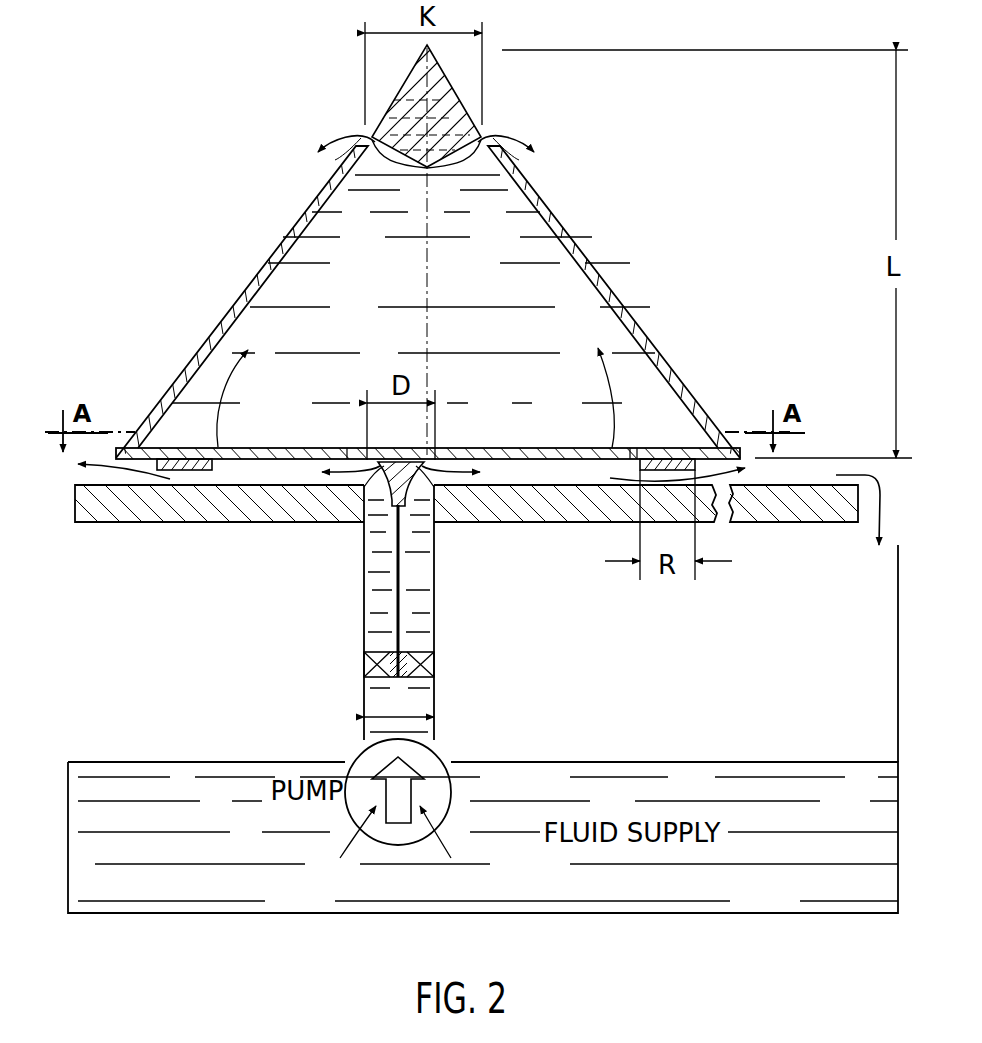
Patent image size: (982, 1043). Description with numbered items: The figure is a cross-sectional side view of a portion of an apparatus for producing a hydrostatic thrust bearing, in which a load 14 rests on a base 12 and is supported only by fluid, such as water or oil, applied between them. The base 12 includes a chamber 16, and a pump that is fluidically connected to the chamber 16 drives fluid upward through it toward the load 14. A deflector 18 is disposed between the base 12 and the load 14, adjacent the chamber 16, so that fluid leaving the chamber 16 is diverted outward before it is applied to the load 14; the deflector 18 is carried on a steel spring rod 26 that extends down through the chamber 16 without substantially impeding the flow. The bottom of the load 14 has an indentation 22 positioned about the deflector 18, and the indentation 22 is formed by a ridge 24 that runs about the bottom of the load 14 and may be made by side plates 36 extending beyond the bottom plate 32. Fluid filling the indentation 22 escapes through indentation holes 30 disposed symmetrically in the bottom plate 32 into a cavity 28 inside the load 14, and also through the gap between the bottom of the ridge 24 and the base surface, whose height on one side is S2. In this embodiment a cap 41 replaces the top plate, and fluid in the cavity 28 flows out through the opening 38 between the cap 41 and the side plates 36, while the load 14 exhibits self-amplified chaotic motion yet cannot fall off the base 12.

The base 12 is at (794, 502).
The load 14 is at (428, 301).
The chamber 16 is at (364, 700).
The deflector 18 is at (392, 502).
The indentation 22 is at (432, 426).
The ridge 24 is at (655, 465).
The steel spring rod 26 is at (397, 566).
The cavity 28 is at (413, 228).
The indentation holes 30 is at (245, 447).
The bottom plate 32 is at (432, 423).
The side plates 36 is at (580, 233).
The opening 38 is at (473, 163).
The cap 41 is at (414, 137).
The gap height S2 is at (197, 475).